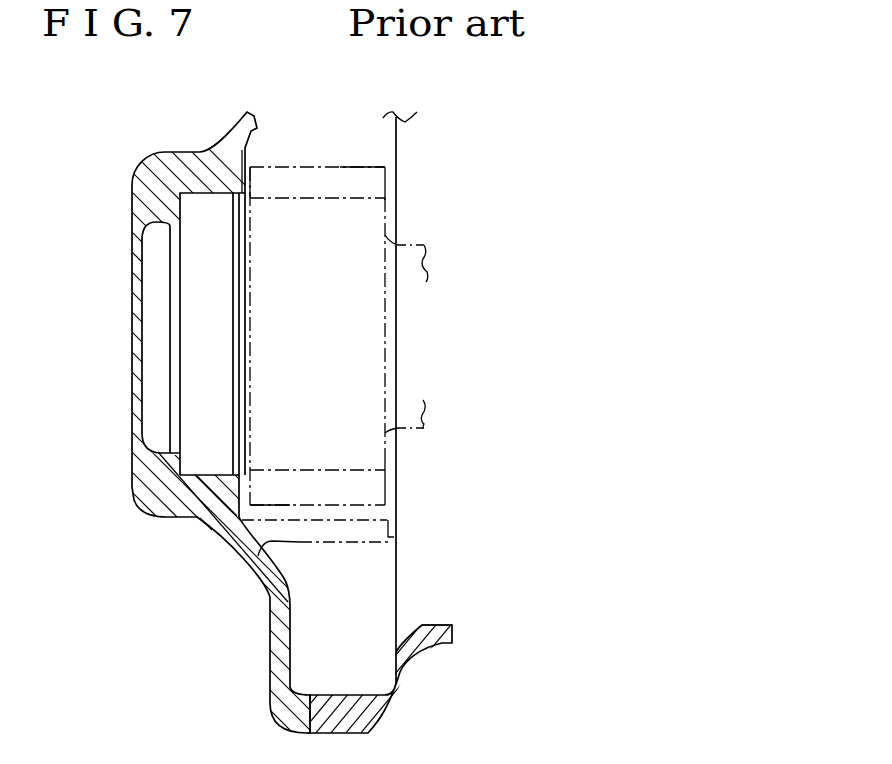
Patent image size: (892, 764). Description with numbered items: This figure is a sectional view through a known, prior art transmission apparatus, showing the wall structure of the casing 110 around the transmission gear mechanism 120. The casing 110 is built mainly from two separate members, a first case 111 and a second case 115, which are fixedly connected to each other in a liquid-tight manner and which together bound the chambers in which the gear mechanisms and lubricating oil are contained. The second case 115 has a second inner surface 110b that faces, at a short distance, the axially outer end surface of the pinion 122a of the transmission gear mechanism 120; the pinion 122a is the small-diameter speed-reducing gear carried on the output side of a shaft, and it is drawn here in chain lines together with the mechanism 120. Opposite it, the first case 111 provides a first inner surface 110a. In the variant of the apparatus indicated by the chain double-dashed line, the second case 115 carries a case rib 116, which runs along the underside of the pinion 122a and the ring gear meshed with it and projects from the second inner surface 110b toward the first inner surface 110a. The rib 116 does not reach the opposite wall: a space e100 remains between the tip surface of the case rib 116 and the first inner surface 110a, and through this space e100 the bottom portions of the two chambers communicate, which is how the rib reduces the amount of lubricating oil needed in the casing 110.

The casing 110 is at (243, 627).
The first inner surface 110a is at (388, 112).
The second inner surface 110b is at (243, 182).
The first case 111 is at (413, 663).
The second case 115 is at (177, 500).
The case rib 116 is at (328, 545).
The transmission gear mechanism 120 is at (422, 233).
The pinion 122a is at (305, 166).
The space e100 is at (390, 542).